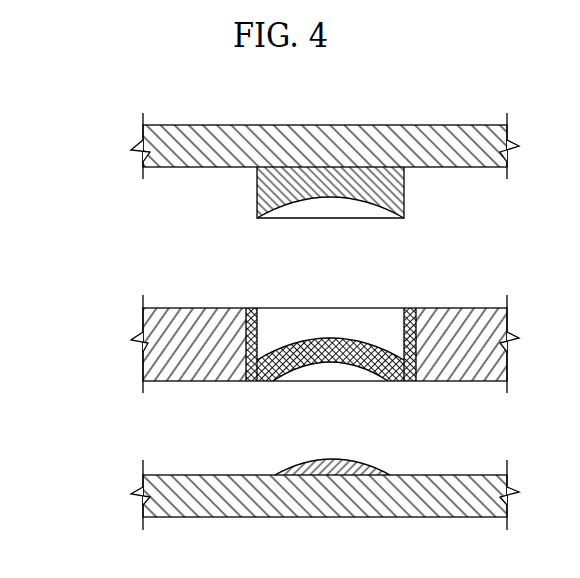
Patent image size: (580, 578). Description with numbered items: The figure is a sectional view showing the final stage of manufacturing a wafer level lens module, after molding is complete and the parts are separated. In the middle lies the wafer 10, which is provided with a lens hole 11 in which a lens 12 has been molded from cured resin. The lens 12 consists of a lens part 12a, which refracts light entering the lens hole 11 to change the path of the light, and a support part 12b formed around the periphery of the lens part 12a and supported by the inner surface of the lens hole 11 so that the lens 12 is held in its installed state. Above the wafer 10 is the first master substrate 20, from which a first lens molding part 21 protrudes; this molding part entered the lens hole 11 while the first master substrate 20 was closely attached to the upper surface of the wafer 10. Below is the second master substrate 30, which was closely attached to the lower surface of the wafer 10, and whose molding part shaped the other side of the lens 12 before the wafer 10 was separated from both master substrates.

The wafer 10 is at (128, 326).
The lens hole 11 is at (408, 372).
The lens 12 is at (359, 331).
The lens part 12a is at (346, 362).
The support part 12b is at (261, 338).
The first master substrate 20 is at (128, 129).
The first lens molding part 21 is at (262, 192).
The second master substrate 30 is at (126, 477).